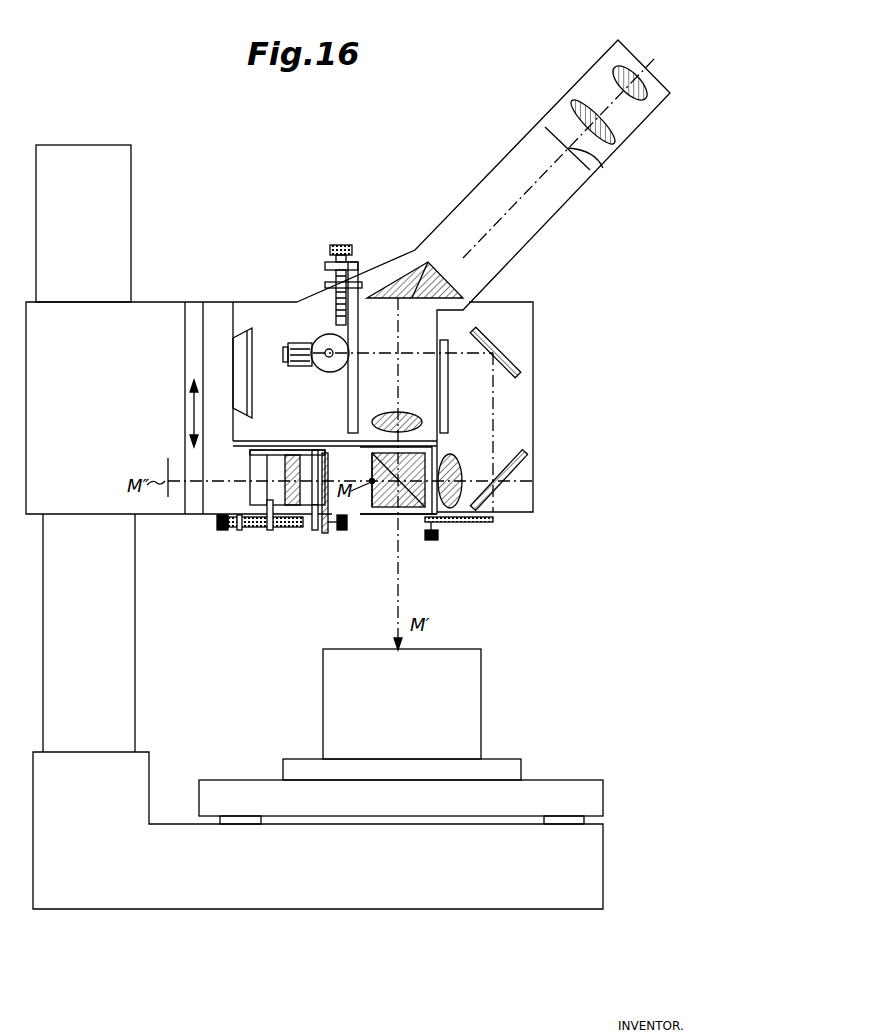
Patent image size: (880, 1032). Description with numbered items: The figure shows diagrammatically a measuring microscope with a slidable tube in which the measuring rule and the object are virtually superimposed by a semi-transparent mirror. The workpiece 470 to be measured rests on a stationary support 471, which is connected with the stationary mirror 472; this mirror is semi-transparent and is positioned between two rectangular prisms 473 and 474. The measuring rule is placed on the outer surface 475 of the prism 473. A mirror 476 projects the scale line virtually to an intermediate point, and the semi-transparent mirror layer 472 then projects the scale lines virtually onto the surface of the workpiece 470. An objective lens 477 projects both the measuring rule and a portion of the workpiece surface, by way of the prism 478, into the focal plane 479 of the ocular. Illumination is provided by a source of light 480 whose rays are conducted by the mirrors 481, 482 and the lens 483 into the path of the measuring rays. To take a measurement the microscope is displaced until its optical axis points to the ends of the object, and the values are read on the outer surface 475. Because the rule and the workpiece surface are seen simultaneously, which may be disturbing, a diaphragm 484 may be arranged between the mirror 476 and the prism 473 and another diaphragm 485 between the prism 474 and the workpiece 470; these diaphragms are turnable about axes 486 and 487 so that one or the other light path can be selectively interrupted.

The workpiece 470 is at (472, 655).
The stationary support 471 is at (294, 895).
The stationary mirror 472 is at (383, 508).
The rectangular prism 473 is at (371, 456).
The rectangular prism 474 is at (438, 441).
The outer surface 475 is at (370, 494).
The mirror 476 is at (293, 500).
The objective lens 477 is at (386, 413).
The prism 478 is at (432, 276).
The focal plane 479 is at (599, 127).
The source of light 480 is at (326, 341).
The mirror 481 is at (488, 338).
The mirror 482 is at (523, 458).
The lens 483 is at (452, 506).
The diaphragm 484 is at (323, 490).
The diaphragm 485 is at (483, 522).
The axis 486 is at (342, 531).
The axis 487 is at (430, 541).